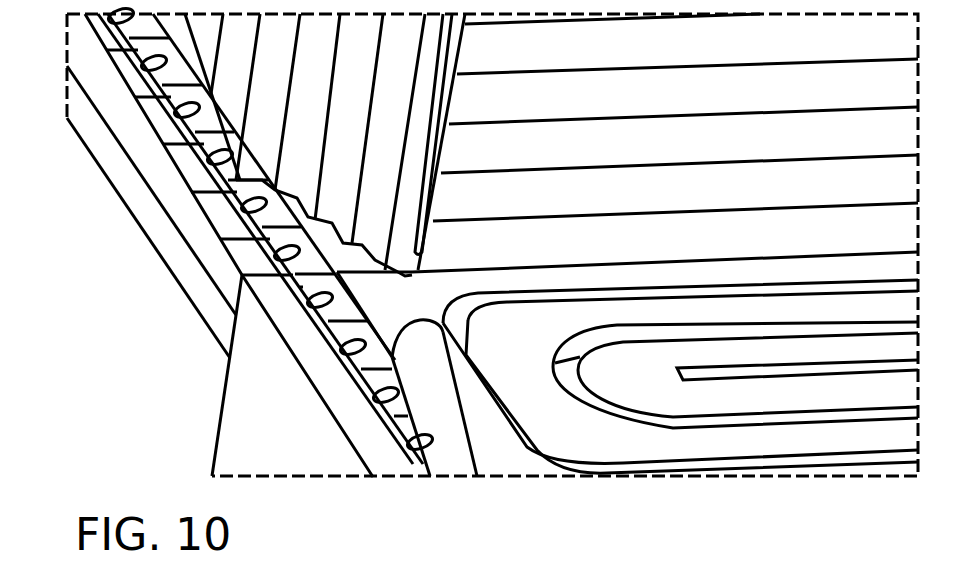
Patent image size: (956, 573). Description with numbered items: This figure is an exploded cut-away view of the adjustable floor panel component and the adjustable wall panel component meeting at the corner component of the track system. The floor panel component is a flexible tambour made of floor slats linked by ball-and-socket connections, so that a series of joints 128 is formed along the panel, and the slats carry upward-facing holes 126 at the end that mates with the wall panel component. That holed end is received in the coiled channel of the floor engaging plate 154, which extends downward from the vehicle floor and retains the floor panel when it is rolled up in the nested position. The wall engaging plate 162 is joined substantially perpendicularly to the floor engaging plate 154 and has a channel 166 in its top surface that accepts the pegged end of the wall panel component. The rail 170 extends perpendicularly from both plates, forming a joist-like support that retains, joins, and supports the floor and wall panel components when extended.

The hole 126 is at (282, 254).
The joints 128 is at (210, 197).
The floor engaging plate 154 is at (260, 374).
The wall engaging plate 162 is at (527, 478).
The channel 166 is at (428, 462).
The rail 170 is at (152, 242).